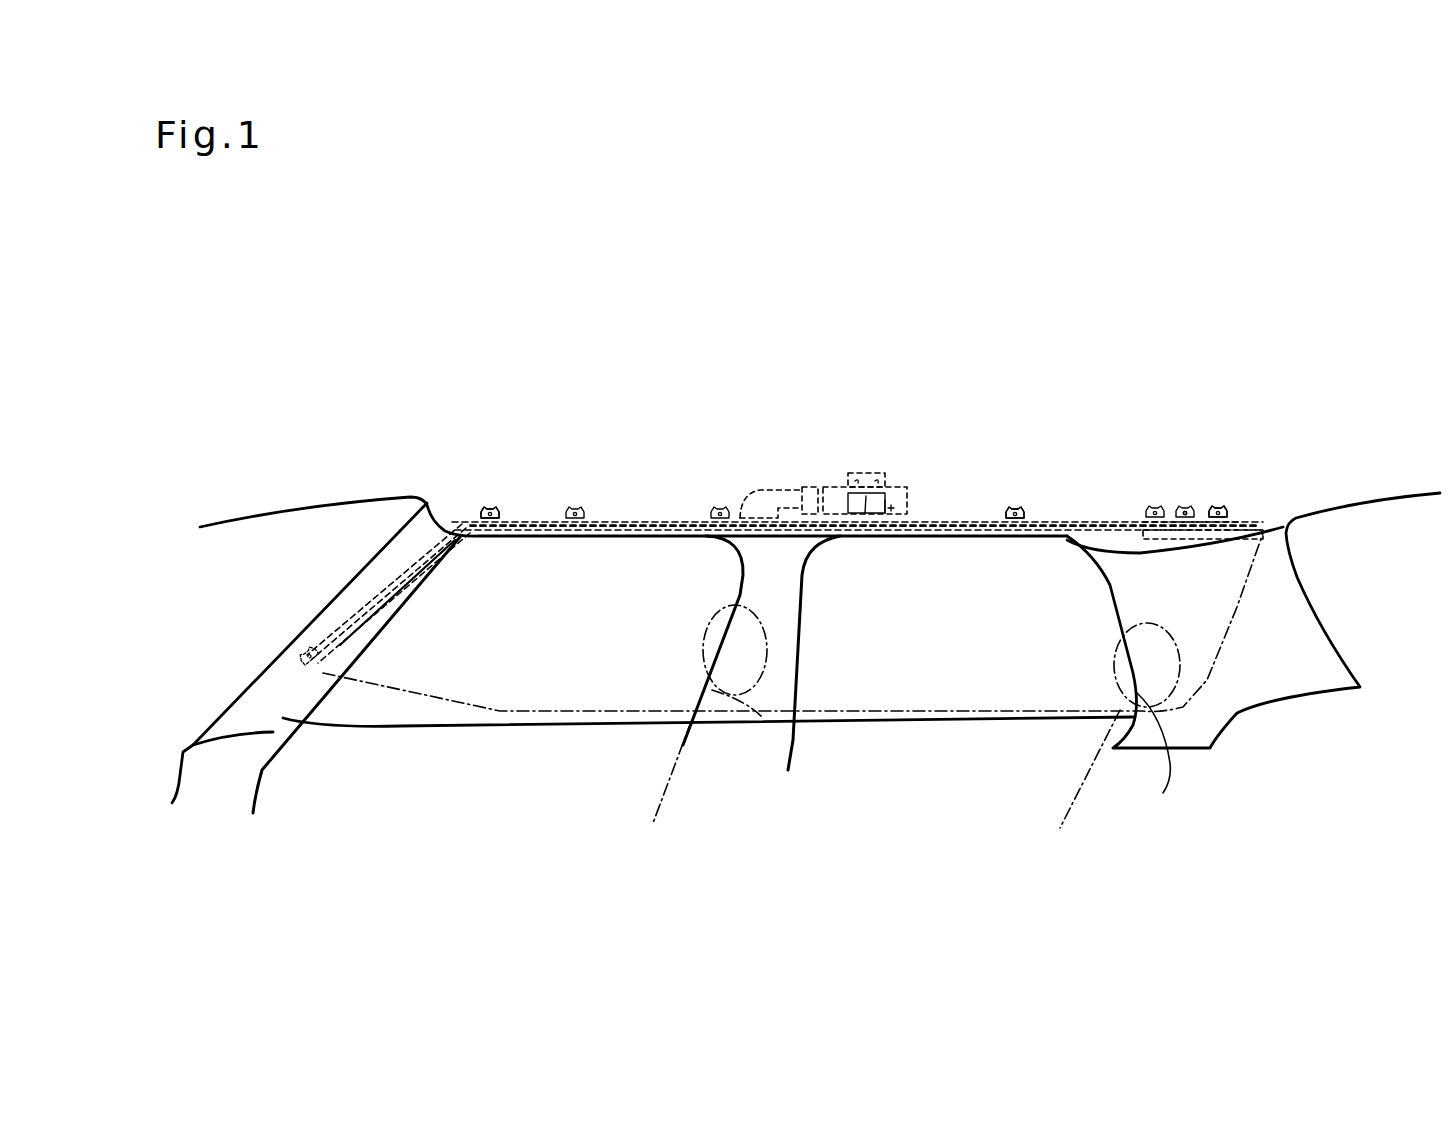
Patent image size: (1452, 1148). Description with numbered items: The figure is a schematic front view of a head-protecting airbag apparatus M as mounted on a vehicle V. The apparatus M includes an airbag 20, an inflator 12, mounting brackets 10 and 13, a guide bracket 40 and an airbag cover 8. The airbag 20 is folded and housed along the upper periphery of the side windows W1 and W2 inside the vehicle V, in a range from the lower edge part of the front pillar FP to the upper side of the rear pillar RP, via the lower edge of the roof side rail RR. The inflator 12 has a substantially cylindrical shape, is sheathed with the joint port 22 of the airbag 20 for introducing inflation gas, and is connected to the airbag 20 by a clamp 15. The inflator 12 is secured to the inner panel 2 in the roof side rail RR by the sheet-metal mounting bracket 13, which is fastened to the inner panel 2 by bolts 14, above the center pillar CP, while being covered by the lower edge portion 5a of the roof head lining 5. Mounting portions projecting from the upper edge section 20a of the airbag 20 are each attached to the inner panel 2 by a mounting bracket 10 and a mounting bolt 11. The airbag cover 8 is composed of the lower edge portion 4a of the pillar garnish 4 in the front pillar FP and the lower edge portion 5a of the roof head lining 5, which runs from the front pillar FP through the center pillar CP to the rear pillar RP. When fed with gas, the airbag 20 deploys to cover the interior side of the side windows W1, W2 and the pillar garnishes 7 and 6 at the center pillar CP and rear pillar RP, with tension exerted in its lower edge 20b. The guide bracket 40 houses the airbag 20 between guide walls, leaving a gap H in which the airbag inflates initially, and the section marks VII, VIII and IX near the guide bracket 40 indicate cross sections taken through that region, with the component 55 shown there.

The inner panel 2 is at (607, 457).
The pillar garnish 4 is at (368, 587).
The lower edge portion of the pillar garnish 4a is at (363, 623).
The roof head lining 5 is at (636, 512).
The lower edge portion of the roof head lining 5a is at (652, 534).
The pillar garnish at the rear pillar 6 is at (1270, 678).
The pillar garnish at the center pillar 7 is at (787, 672).
The airbag cover 8 is at (384, 594).
The mounting bracket 10 is at (470, 497).
The mounting bolt 11 is at (487, 497).
The inflator 12 is at (893, 514).
The mounting bracket 13 is at (865, 514).
The bolts 14 is at (880, 472).
The clamp 15 is at (808, 487).
The airbag 20 is at (932, 517).
The upper edge section of the airbag 20a is at (534, 560).
The lower edge of the airbag 20b is at (585, 712).
The joint port 22 is at (748, 497).
The guide bracket 40 is at (1253, 500).
The rear mounting member 55 is at (1150, 503).
The gap H is at (1193, 510).
The vehicle V is at (294, 436).
The front pillar FP is at (256, 627).
The rear pillar RP is at (1346, 606).
The center pillar CP is at (811, 673).
The roof side rail RR is at (663, 465).
The head-protecting airbag apparatus M is at (1010, 308).
The side window W1 is at (427, 713).
The side window W2 is at (890, 673).
The section line VII is at (1127, 591).
The section line VIII is at (1170, 591).
The section line IX is at (1205, 591).